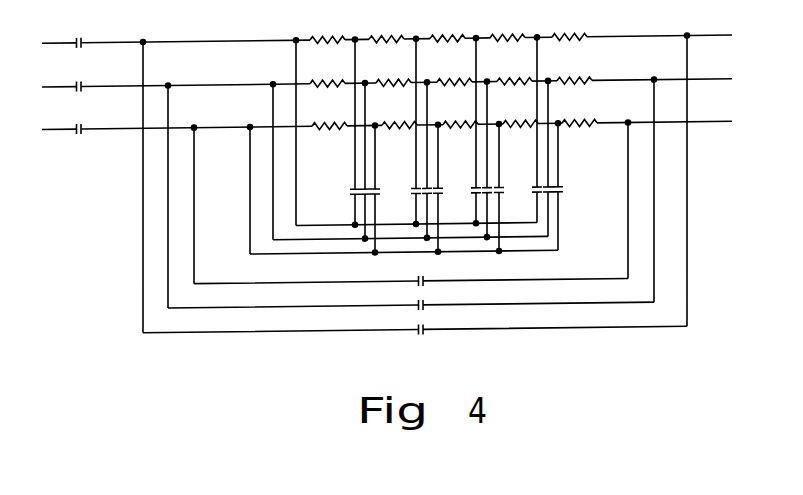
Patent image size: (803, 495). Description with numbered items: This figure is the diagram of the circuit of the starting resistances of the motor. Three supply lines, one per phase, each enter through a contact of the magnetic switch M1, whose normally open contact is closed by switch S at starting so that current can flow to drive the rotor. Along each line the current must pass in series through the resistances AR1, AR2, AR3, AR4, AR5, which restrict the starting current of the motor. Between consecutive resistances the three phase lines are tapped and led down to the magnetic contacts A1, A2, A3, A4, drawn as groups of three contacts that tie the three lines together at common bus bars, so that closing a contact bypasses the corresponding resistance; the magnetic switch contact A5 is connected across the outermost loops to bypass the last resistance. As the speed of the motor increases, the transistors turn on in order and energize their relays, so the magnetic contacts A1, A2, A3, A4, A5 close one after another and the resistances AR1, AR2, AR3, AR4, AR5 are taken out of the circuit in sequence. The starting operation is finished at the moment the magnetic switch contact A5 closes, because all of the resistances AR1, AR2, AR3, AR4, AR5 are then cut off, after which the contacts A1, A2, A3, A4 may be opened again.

The magnetic switch M1 is at (95, 75).
The resistance AR1 is at (325, 70).
The resistance AR2 is at (388, 69).
The resistance AR3 is at (450, 68).
The resistance AR4 is at (511, 68).
The resistance AR5 is at (575, 68).
The magnetic contact A1 is at (347, 146).
The magnetic contact A2 is at (412, 145).
The magnetic contact A3 is at (475, 145).
The magnetic contact A4 is at (532, 144).
The magnetic switch contact A5 is at (440, 294).